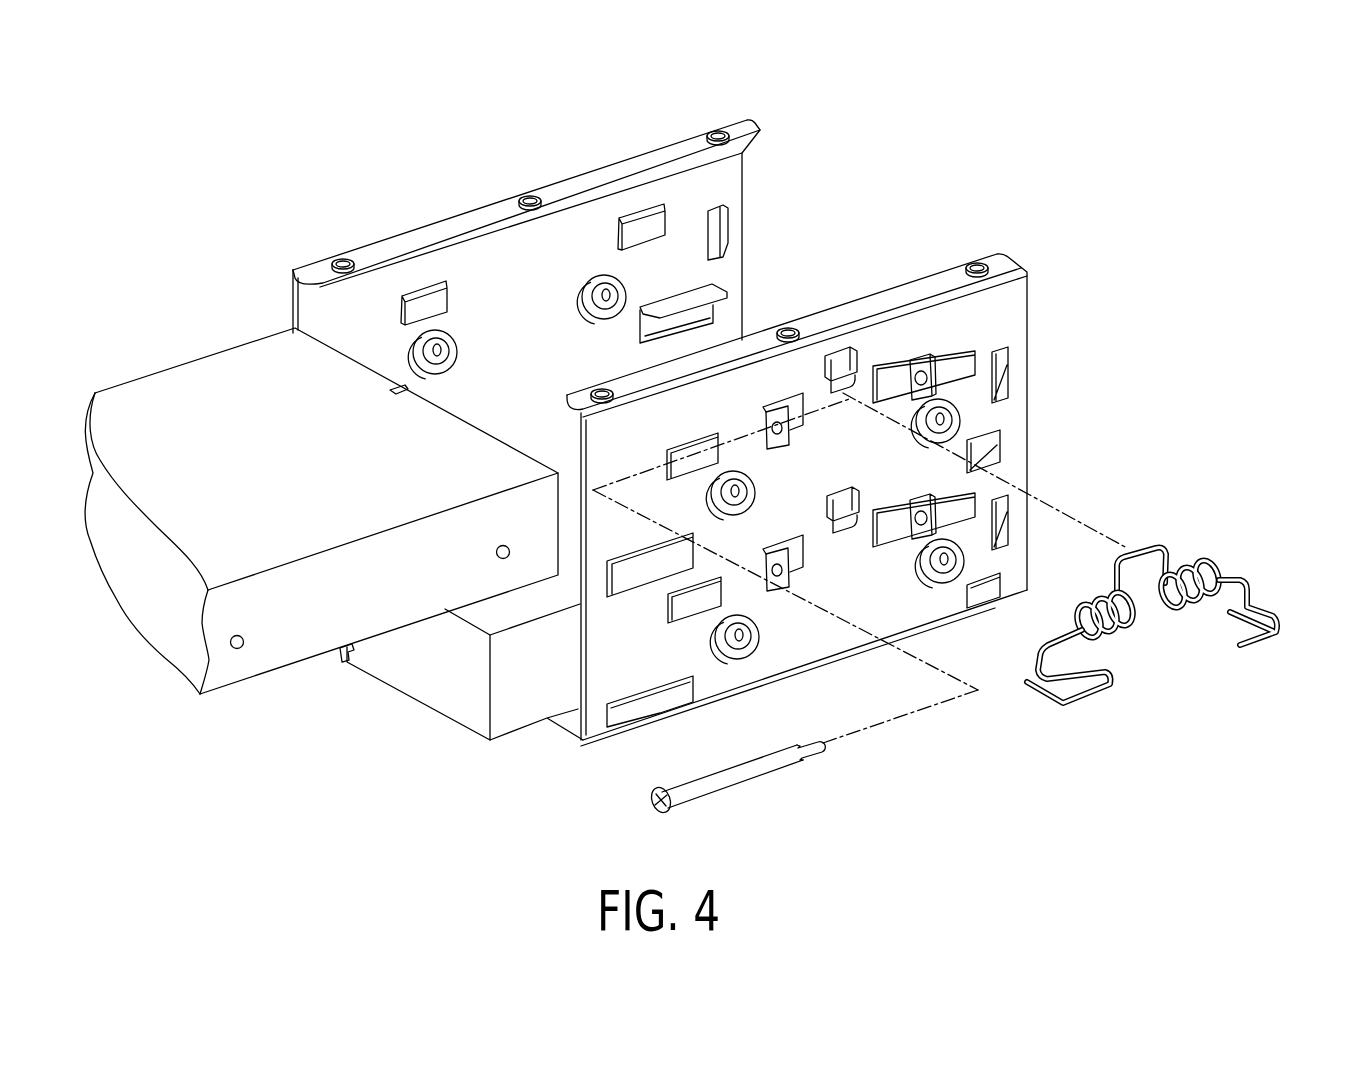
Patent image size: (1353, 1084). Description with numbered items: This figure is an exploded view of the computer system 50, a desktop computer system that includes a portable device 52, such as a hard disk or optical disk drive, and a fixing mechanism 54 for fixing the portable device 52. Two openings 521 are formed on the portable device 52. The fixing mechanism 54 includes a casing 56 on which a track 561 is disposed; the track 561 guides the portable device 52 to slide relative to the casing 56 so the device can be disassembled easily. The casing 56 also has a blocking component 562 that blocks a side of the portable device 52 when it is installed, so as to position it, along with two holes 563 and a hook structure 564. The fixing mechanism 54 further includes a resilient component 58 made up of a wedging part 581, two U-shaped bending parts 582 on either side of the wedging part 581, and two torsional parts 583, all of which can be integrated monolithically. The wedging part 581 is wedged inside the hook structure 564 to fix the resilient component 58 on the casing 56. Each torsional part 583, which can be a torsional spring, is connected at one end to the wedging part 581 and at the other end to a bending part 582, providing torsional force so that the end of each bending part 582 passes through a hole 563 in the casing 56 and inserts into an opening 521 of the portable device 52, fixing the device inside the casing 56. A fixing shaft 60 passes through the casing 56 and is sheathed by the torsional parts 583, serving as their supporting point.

The computer system 50 is at (1057, 160).
The portable device 52 is at (188, 373).
The opening 521 is at (240, 650).
The fixing mechanism 54 is at (1112, 487).
The casing 56 is at (1012, 305).
The track 561 is at (713, 287).
The blocking component 562 is at (725, 228).
The hole 563 is at (735, 488).
The hook structure 564 is at (845, 355).
The resilient component 58 is at (1322, 760).
The wedging part 581 is at (1148, 562).
The bending part 582 is at (1090, 703).
The torsional part 583 is at (1130, 632).
The fixing shaft 60 is at (760, 768).